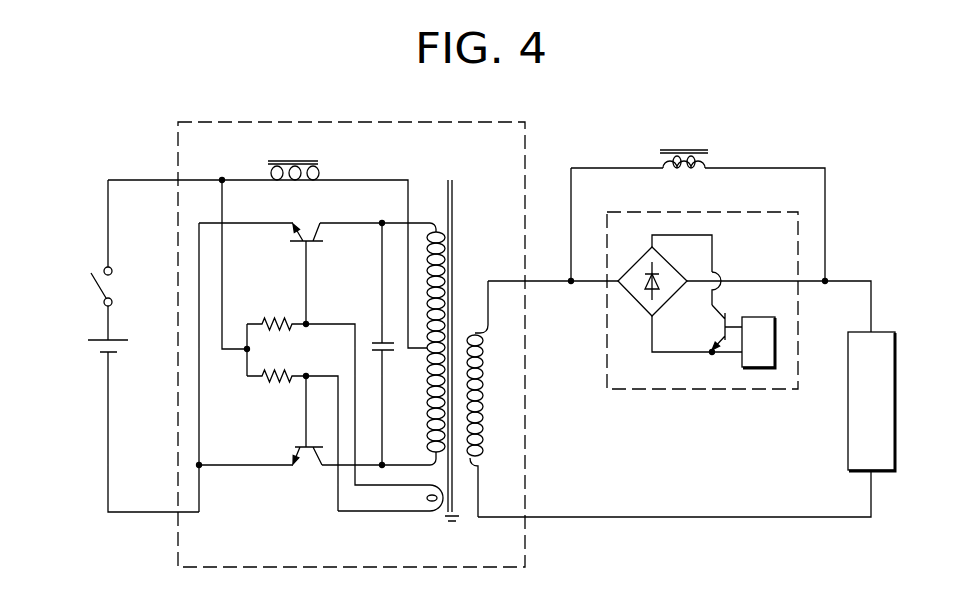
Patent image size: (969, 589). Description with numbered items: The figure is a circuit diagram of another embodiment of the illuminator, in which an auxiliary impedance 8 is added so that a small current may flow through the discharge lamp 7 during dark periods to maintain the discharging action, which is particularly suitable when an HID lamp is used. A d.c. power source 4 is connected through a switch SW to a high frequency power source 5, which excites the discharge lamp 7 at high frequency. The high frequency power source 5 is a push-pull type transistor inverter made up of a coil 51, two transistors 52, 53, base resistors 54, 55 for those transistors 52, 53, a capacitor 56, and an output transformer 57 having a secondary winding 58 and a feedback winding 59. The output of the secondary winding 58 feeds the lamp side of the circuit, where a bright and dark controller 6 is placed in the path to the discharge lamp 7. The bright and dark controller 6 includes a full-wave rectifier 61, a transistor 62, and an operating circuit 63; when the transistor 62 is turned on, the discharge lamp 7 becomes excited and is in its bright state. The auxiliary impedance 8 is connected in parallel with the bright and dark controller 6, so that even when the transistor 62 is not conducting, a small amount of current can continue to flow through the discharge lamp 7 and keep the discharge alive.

The d.c. power source 4 is at (90, 346).
The high frequency power source 5 is at (178, 542).
The bright and dark controller 6 is at (668, 392).
The discharge lamp 7 is at (848, 437).
The auxiliary impedance 8 is at (680, 150).
The coil 51 is at (322, 158).
The transistor 52 is at (298, 243).
The transistor 53 is at (296, 452).
The base resistor 54 is at (290, 325).
The base resistor 55 is at (280, 380).
The capacitor 56 is at (382, 340).
The output transformer 57 is at (453, 182).
The secondary winding 58 is at (478, 390).
The feedback winding 59 is at (400, 512).
The full-wave rectifier 61 is at (633, 298).
The transistor 62 is at (722, 327).
The operating circuit 63 is at (740, 366).
The switch SW is at (93, 297).